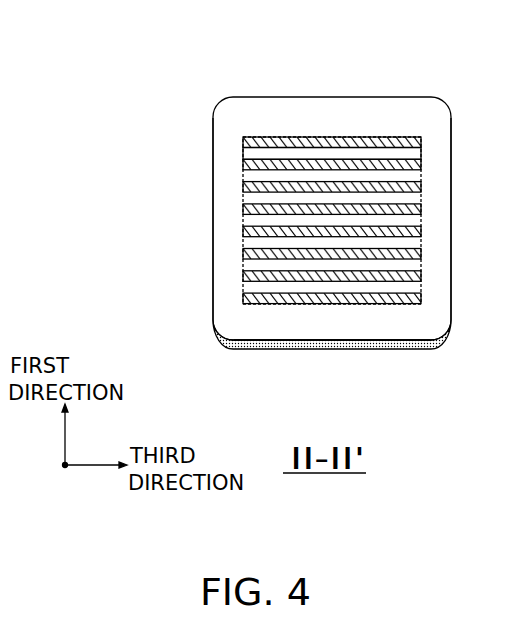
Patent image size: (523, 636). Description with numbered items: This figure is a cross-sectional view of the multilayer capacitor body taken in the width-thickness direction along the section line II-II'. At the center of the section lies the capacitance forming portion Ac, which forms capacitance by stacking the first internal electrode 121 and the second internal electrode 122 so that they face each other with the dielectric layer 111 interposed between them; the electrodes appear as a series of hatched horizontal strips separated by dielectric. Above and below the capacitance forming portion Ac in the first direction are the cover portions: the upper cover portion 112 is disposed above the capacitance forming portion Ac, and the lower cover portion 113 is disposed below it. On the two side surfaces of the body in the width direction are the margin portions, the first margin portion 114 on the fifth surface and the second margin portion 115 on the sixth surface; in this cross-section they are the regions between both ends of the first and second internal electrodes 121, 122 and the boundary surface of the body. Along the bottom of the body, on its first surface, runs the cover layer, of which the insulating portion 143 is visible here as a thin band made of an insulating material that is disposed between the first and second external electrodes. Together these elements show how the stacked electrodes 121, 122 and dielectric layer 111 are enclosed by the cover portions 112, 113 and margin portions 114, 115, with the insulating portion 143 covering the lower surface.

The upper cover portion 112 is at (330, 97).
The lower cover portion 113 is at (328, 330).
The first margin portion 114 is at (220, 248).
The second margin portion 115 is at (445, 250).
The first internal electrode 121 is at (420, 143).
The second internal electrode 122 is at (420, 165).
The dielectric layer 111 is at (422, 150).
The insulating portion 143 is at (390, 345).
The capacitance forming portion Ac is at (245, 222).